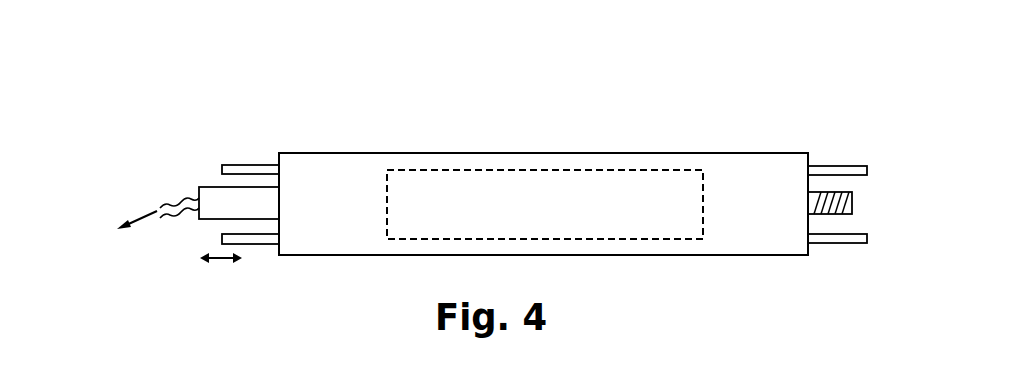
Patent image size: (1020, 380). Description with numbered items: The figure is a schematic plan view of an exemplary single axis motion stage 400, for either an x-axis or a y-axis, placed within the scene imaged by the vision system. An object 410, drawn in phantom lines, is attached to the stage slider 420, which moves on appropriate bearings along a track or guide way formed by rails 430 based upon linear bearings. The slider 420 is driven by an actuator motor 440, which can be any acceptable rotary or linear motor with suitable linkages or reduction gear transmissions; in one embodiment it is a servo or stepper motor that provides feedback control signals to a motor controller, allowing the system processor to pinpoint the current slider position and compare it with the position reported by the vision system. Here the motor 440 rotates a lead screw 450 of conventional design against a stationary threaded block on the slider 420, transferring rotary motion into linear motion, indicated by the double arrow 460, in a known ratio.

The single axis motion stage 400 is at (670, 138).
The object 410 is at (447, 168).
The stage slider 420 is at (719, 238).
The rails 430 is at (842, 170).
The actuator motor 440 is at (227, 190).
The lead screw 450 is at (853, 200).
The double arrow 460 is at (220, 261).